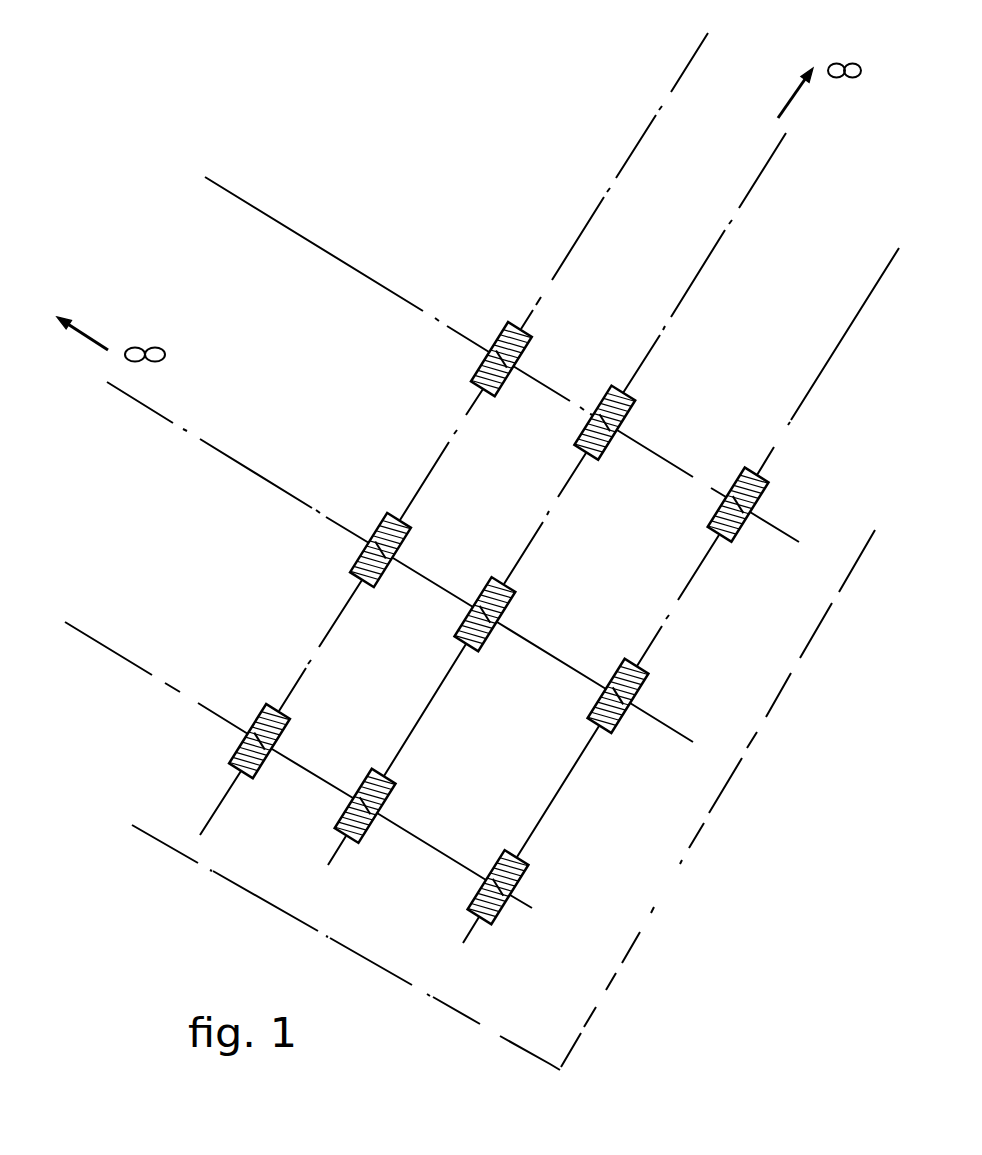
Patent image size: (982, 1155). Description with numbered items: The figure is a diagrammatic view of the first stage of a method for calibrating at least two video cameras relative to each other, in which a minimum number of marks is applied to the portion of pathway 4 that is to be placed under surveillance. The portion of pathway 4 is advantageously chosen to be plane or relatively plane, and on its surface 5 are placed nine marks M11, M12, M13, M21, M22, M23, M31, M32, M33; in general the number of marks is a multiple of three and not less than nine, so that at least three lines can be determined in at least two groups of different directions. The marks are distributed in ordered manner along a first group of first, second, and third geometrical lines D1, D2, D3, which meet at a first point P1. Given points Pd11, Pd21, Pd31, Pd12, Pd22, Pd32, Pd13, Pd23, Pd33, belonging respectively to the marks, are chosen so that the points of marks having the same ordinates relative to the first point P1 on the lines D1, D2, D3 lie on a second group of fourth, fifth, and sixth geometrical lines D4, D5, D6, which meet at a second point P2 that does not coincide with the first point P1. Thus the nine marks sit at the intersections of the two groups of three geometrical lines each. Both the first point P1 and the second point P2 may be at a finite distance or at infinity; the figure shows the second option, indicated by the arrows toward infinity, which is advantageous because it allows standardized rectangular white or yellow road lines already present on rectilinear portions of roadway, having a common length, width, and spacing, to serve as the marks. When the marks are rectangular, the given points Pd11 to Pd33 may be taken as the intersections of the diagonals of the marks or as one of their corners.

The first geometrical line D1 is at (576, 217).
The second geometrical line D2 is at (709, 243).
The third geometrical line D3 is at (878, 277).
The fourth geometrical line D4 is at (358, 268).
The fifth geometrical line D5 is at (208, 442).
The sixth geometrical line D6 is at (125, 653).
The first point P1 is at (819, 59).
The second point P2 is at (111, 307).
The portion of pathway 4 is at (597, 1010).
The surface 5 is at (650, 834).
The mark M11 is at (486, 366).
The mark M12 is at (360, 560).
The mark M13 is at (236, 752).
The mark M21 is at (608, 386).
The mark M22 is at (502, 580).
The mark M23 is at (372, 780).
The mark M31 is at (754, 471).
The mark M32 is at (628, 672).
The mark M33 is at (506, 859).
The given point Pd11 is at (502, 391).
The given point Pd12 is at (384, 571).
The given point Pd13 is at (243, 777).
The given point Pd21 is at (614, 420).
The given point Pd22 is at (471, 644).
The given point Pd23 is at (370, 838).
The given point Pd31 is at (750, 504).
The given point Pd32 is at (625, 688).
The given point Pd33 is at (520, 893).